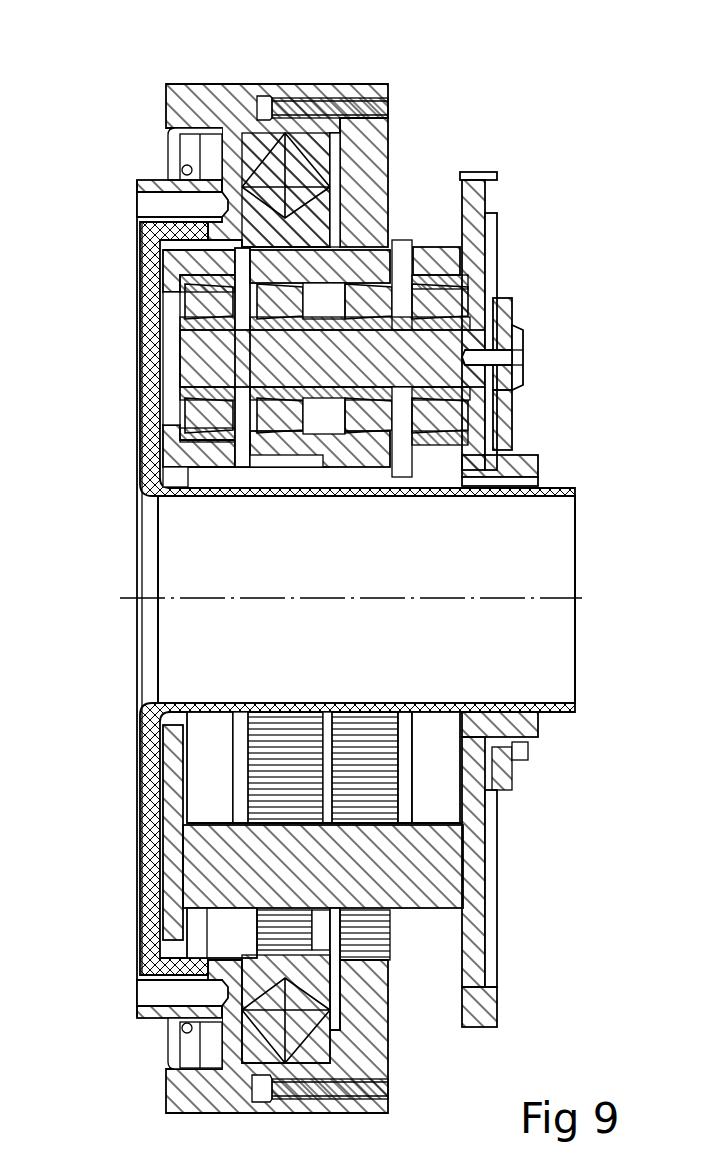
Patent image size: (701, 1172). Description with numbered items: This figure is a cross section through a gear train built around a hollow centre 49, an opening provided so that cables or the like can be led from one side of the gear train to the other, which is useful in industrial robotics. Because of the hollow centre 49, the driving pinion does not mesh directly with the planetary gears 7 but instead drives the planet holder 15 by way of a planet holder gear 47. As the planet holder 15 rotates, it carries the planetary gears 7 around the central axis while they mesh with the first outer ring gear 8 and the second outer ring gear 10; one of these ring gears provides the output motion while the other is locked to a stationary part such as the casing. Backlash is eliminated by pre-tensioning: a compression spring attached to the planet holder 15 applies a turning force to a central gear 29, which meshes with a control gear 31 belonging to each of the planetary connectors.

The planetary gear 7 is at (383, 258).
The first outer ring gear 8 is at (358, 232).
The second outer ring gear 10 is at (274, 243).
The planet holder 15 is at (467, 868).
The central gear 29 is at (503, 441).
The control gear 31 is at (503, 312).
The planet holder gear 47 is at (488, 1027).
The hollow centre 49 is at (380, 561).